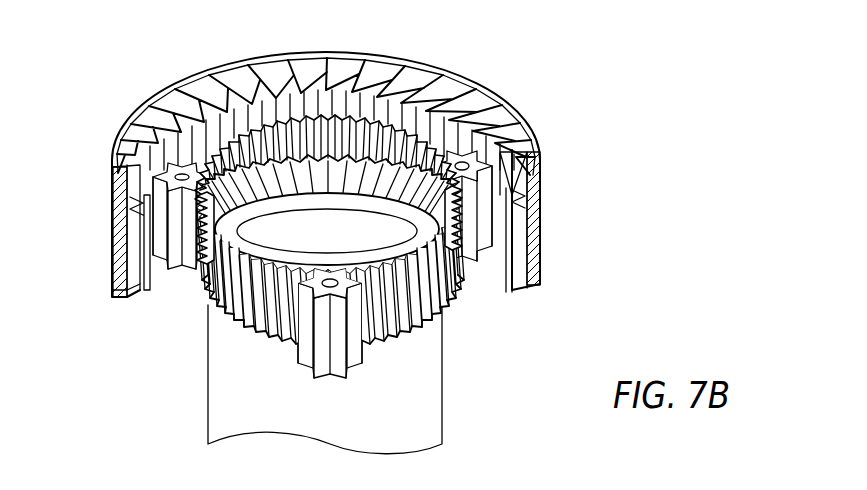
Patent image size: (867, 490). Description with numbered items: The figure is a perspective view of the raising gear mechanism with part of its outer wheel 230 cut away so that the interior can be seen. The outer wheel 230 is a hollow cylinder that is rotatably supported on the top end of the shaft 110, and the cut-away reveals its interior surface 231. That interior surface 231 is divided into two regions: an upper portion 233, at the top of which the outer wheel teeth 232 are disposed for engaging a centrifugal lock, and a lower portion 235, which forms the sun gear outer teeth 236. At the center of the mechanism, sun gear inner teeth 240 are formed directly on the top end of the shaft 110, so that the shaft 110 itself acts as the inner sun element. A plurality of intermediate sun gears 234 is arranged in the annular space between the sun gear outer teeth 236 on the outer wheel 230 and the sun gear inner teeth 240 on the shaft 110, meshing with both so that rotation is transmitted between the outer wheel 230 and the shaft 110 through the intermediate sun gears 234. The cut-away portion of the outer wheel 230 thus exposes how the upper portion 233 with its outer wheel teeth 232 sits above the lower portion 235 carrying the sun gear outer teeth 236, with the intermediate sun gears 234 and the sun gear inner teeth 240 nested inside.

The shaft 110 is at (442, 405).
The outer wheel 230 is at (540, 215).
The interior surface 231 is at (243, 112).
The outer wheel teeth 232 is at (460, 88).
The upper portion 233 is at (115, 172).
The intermediate sun gears 234 is at (163, 280).
The lower portion 235 is at (112, 288).
The sun gear outer teeth 236 is at (147, 263).
The sun gear inner teeth 240 is at (451, 303).